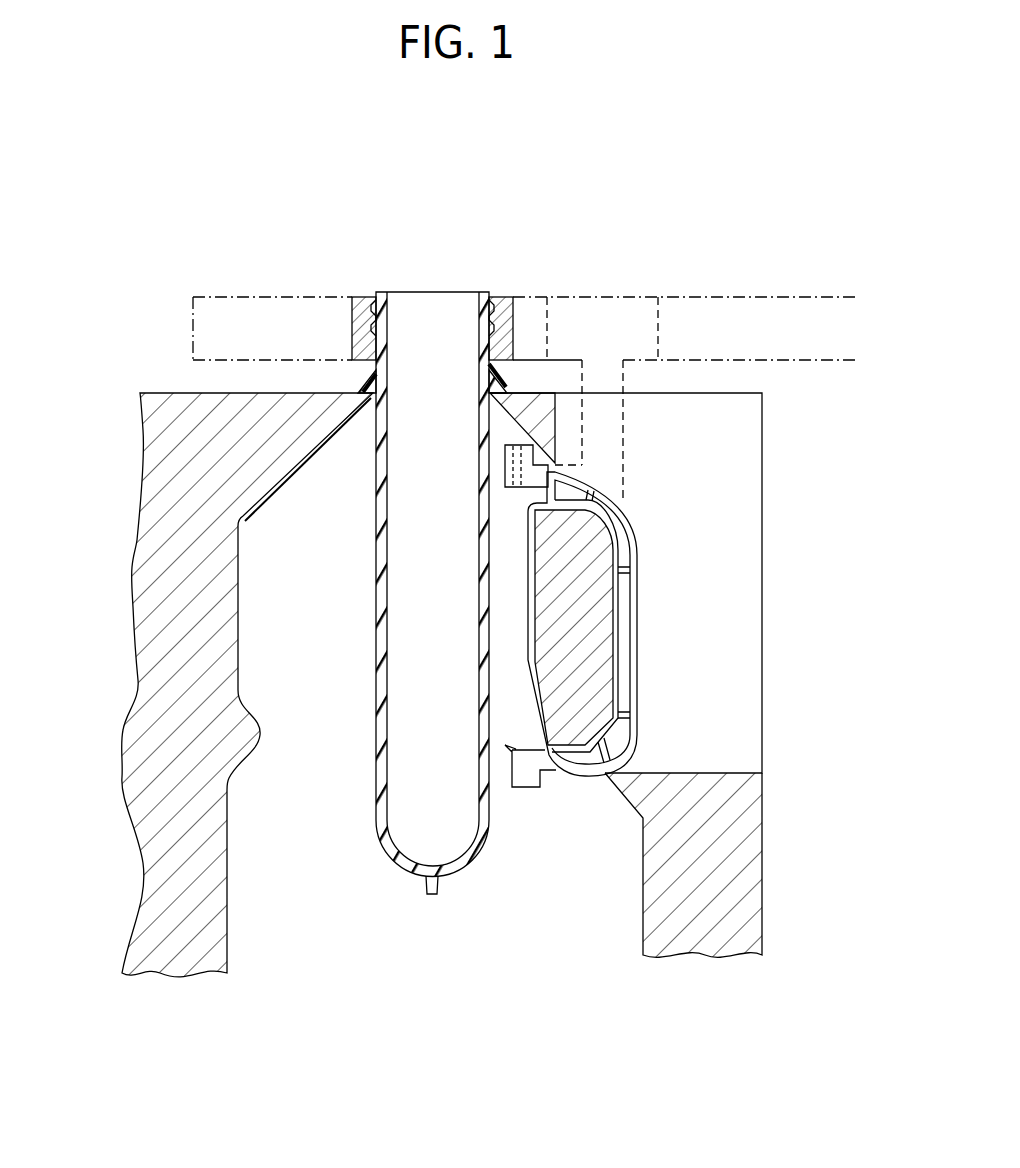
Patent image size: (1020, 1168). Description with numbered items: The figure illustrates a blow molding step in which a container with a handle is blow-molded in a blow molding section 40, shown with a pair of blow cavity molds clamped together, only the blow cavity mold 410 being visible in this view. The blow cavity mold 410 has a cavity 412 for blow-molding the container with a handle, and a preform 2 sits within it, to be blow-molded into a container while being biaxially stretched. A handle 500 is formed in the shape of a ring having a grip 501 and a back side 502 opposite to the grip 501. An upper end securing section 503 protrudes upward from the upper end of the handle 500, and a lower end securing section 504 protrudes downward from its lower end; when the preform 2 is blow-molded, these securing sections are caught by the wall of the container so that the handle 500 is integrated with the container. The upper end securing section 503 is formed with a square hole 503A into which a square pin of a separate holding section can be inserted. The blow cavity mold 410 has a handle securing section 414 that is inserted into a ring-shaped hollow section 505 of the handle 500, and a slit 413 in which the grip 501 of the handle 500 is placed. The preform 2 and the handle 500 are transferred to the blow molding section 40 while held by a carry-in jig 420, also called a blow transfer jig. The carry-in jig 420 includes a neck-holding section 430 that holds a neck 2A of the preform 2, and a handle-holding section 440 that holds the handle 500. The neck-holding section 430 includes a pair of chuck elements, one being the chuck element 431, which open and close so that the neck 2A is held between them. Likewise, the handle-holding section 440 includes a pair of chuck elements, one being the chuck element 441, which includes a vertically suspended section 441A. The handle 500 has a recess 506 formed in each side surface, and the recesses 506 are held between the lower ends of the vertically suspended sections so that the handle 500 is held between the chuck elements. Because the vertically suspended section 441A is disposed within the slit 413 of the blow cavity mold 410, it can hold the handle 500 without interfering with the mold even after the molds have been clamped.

The preform 2 is at (412, 579).
The neck 2A is at (378, 291).
The blow molding section 40 is at (690, 672).
The blow cavity mold 410 is at (752, 860).
The cavity 412 is at (238, 657).
The slit 413 is at (722, 573).
The handle securing section 414 is at (570, 627).
The carry-in jig 420 is at (246, 296).
The neck-holding section 430 is at (539, 294).
The chuck element 431 is at (497, 296).
The handle-holding section 440 is at (684, 364).
The chuck element 441 is at (684, 364).
The vertically suspended section 441A is at (624, 432).
The handle 500 is at (583, 621).
The grip 501 is at (640, 656).
The back side 502 is at (537, 700).
The upper end securing section 503 is at (474, 486).
The square hole 503A is at (513, 470).
The lower end securing section 504 is at (524, 790).
The ring-shaped hollow section 505 is at (613, 613).
The recess 506 is at (573, 495).